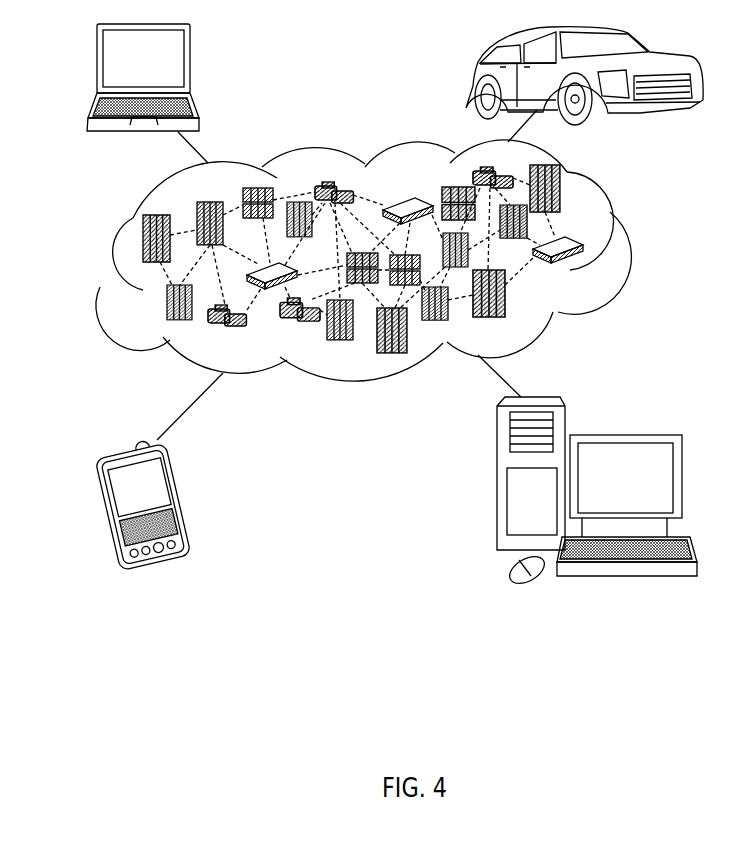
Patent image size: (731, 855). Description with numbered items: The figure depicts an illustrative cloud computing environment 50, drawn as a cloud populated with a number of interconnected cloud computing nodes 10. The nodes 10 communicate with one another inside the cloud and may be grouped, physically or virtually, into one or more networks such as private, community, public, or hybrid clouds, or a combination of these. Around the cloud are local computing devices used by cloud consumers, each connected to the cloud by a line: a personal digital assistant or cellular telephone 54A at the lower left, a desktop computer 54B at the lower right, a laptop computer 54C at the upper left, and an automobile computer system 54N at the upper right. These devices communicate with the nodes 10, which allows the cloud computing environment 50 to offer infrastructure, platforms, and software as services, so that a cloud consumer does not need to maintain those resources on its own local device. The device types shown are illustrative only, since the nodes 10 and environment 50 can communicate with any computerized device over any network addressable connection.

The cloud computing nodes 10 is at (585, 266).
The cloud computing environment 50 is at (627, 243).
The personal digital assistant or cellular telephone 54A is at (180, 498).
The desktop computer 54B is at (623, 433).
The laptop computer 54C is at (190, 62).
The automobile computer system 54N is at (478, 77).